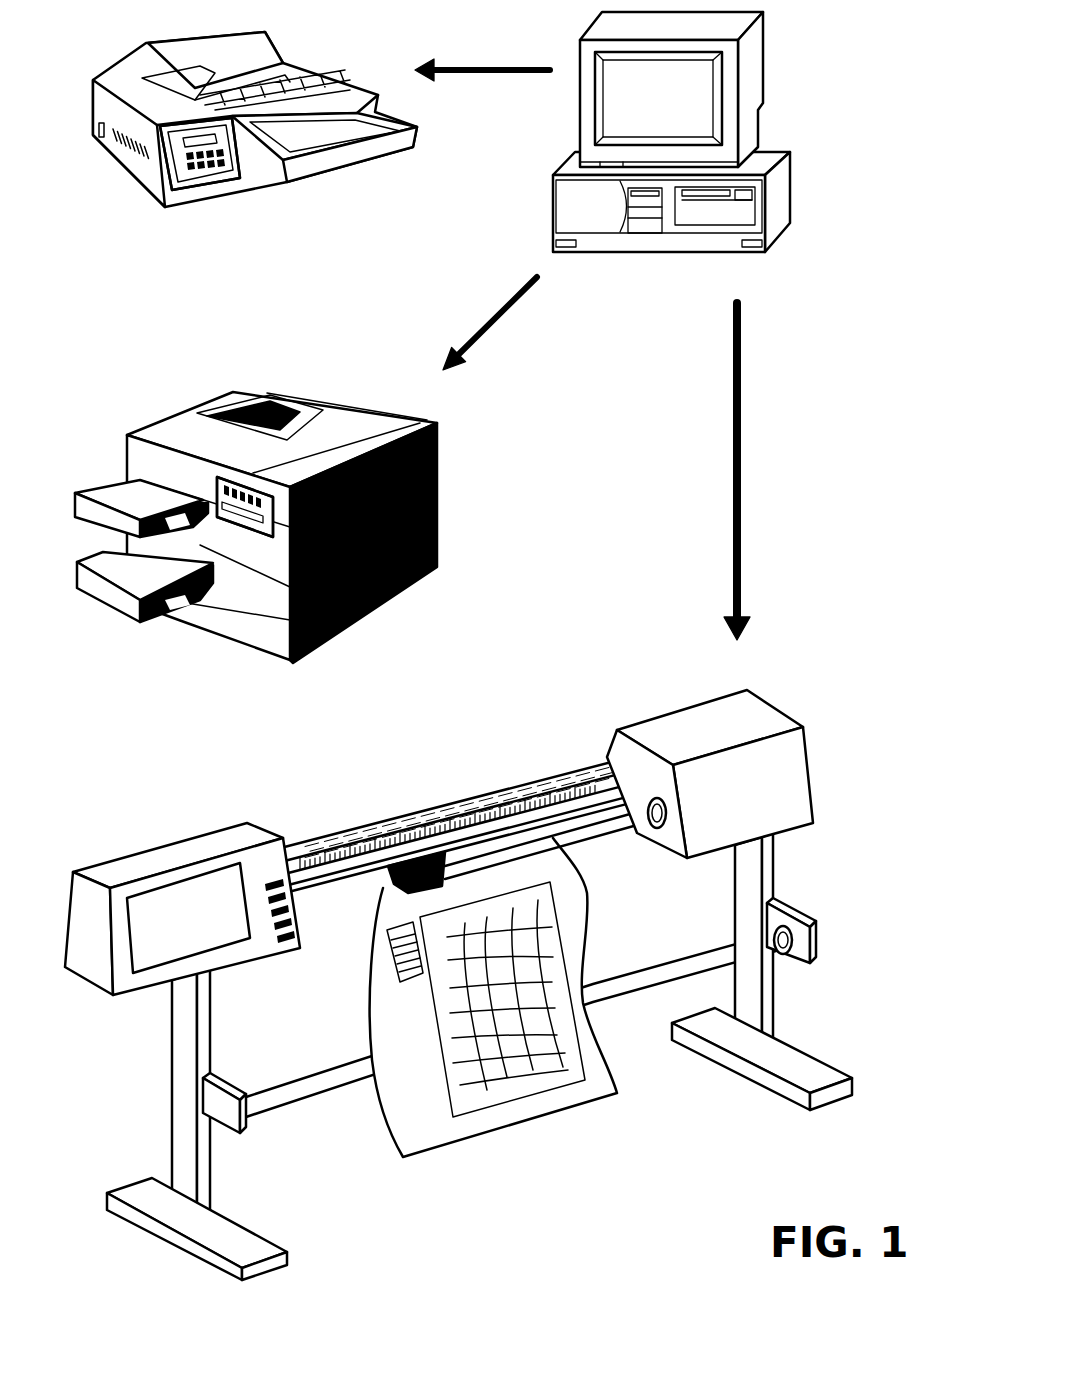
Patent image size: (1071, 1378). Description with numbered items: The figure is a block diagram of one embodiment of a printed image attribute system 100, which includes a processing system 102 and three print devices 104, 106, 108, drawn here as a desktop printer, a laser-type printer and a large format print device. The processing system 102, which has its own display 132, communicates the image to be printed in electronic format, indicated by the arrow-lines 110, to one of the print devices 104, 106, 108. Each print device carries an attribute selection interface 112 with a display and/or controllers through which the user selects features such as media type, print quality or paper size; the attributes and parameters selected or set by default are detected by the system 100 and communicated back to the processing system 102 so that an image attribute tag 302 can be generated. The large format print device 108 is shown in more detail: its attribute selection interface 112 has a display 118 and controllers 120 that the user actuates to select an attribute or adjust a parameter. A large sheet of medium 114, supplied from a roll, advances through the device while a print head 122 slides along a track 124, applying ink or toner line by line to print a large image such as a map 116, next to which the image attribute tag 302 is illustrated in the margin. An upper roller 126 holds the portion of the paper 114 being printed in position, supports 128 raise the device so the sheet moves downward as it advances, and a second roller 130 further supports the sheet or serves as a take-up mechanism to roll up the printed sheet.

The printed image attribute system 100 is at (671, 126).
The processing system 102 is at (620, 132).
The print device 104 is at (320, 180).
The print device 106 is at (437, 472).
The print device 108 is at (473, 699).
The arrow-lines 110 is at (490, 63).
The attribute selection interface 112 is at (179, 556).
The sheet of medium 114 is at (542, 1123).
The map 116 is at (430, 1013).
The display 118 is at (182, 910).
The controllers 120 is at (270, 858).
The print head 122 is at (393, 887).
The track 124 is at (475, 798).
The upper roller 126 is at (592, 847).
The supports 128 is at (170, 1060).
The second roller 130 is at (623, 973).
The display 132 is at (642, 87).
The image attribute tag 302 is at (412, 987).